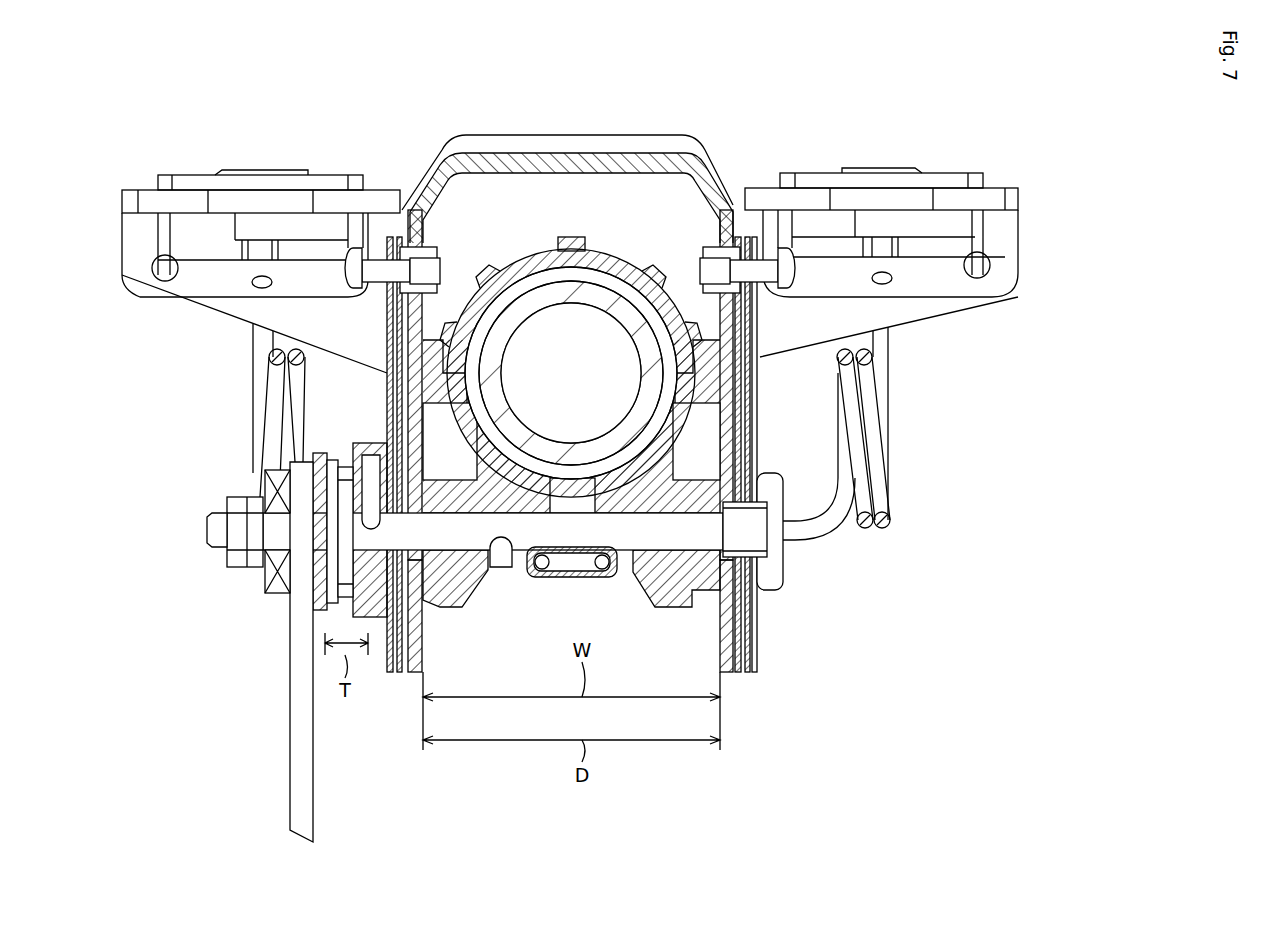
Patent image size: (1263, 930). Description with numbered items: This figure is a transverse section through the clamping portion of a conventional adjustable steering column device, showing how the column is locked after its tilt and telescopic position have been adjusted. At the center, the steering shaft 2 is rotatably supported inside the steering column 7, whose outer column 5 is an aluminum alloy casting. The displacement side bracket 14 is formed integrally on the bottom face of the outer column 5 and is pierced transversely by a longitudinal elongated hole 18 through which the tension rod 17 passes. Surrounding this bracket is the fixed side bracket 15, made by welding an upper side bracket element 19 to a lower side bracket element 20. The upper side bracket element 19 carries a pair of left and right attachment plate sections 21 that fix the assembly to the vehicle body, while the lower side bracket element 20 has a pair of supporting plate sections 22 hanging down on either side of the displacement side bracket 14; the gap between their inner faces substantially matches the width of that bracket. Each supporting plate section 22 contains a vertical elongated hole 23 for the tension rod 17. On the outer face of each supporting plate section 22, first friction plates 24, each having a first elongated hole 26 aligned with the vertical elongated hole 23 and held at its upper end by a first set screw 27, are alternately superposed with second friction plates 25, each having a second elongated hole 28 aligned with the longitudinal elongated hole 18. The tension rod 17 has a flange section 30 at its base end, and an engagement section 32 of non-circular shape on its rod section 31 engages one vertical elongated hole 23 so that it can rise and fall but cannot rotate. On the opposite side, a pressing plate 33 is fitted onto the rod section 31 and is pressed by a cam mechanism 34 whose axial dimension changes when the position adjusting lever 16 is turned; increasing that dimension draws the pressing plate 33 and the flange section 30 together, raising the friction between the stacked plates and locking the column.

The steering shaft 2 is at (563, 293).
The outer column 5 is at (495, 260).
The steering column 7 is at (637, 283).
The displacement side bracket 14 is at (450, 563).
The fixed side bracket 15 is at (645, 165).
The position adjusting lever 16 is at (298, 705).
The tension rod 17 is at (622, 530).
The longitudinal elongated hole 18 is at (500, 545).
The upper side bracket element 19 is at (540, 145).
The lower side bracket element 20 is at (472, 157).
The attachment plate sections 21 is at (330, 200).
The supporting plate sections 22 is at (415, 675).
The vertical elongated hole 23 is at (432, 600).
The first friction plates 24 is at (400, 400).
The second friction plates 25 is at (395, 675).
The first elongated hole 26 is at (395, 360).
The first set screw 27 is at (395, 265).
The second elongated hole 28 is at (370, 500).
The flange section 30 is at (775, 590).
The rod section 31 is at (690, 537).
The engagement section 32 is at (763, 557).
The pressing plate 33 is at (377, 585).
The cam mechanism 34 is at (313, 593).